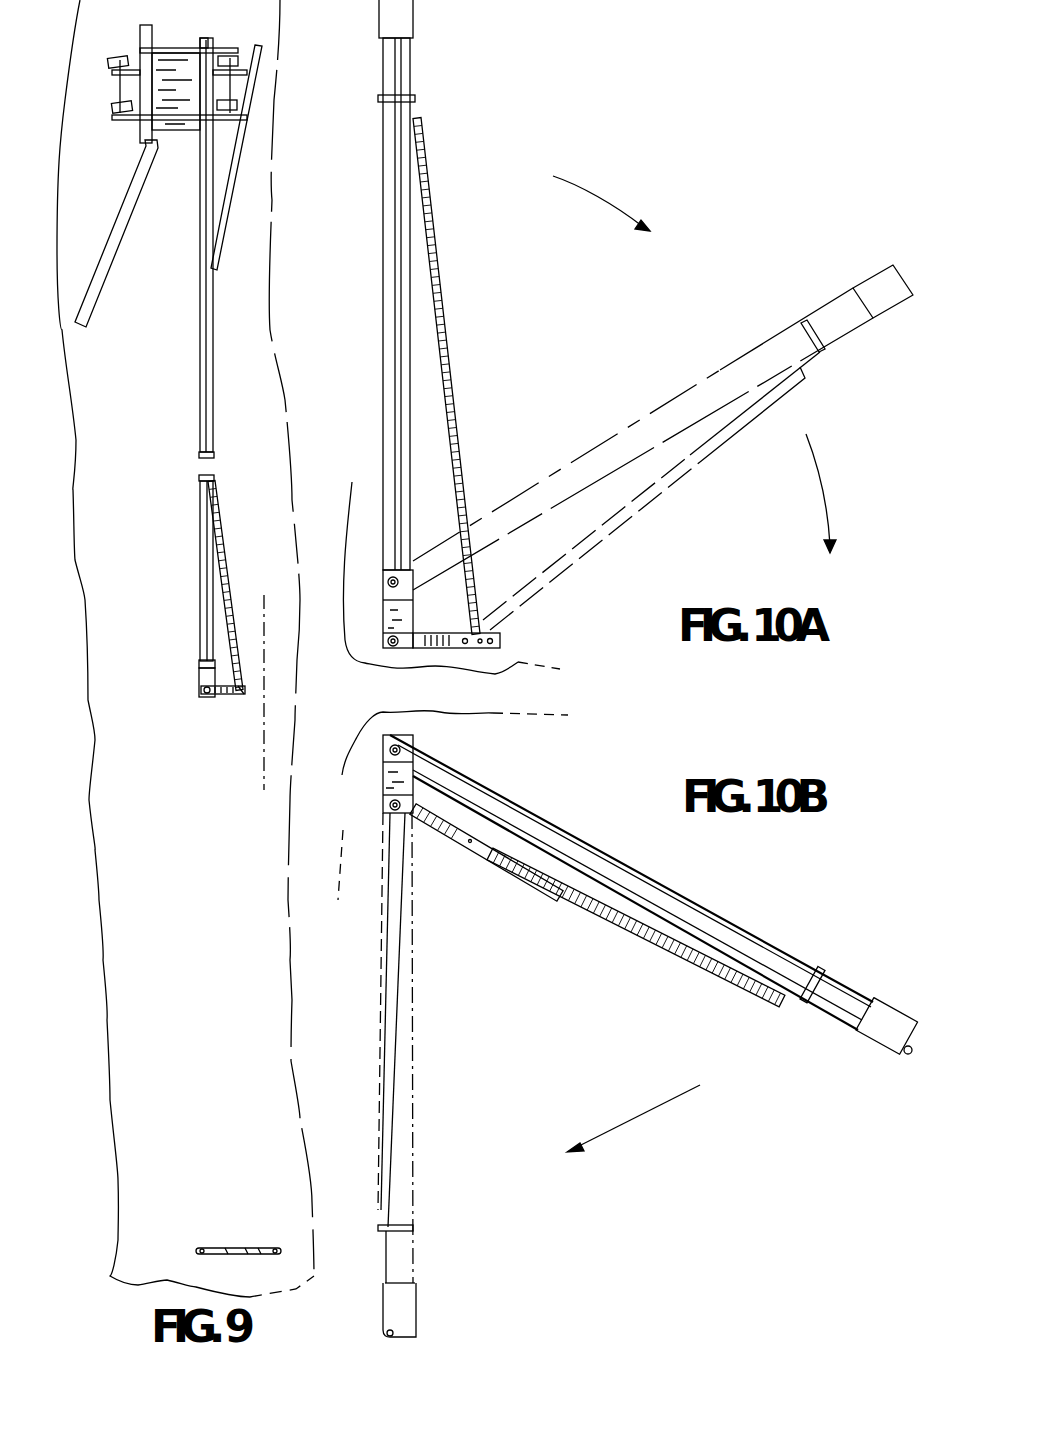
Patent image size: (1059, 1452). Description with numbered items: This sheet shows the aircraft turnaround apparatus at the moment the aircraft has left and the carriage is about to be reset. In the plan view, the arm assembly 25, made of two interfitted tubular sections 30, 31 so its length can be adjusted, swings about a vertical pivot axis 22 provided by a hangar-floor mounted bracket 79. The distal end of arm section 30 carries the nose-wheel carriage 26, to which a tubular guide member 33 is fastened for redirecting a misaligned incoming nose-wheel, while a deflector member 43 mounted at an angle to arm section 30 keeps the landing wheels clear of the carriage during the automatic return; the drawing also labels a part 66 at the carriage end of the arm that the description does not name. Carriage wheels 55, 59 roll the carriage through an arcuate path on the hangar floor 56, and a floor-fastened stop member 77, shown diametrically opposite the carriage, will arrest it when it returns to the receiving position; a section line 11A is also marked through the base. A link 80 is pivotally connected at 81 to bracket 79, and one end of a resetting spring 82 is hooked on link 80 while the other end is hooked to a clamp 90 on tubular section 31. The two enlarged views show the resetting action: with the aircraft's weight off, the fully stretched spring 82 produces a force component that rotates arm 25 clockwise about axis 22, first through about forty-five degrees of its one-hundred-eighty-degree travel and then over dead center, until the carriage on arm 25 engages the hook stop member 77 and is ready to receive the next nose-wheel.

In FIG. 9, the section line 11A is at (266, 617).
In FIG. 9, the vertical pivot axis 22 is at (199, 665).
In FIG. 10A, the vertical pivot axis 22 is at (385, 582).
In FIG. 10B, the vertical pivot axis 22 is at (408, 745).
In FIG. 9, the arm assembly 25 is at (192, 433).
In FIG. 10A, the arm assembly 25 is at (382, 342).
In FIG. 10B, the arm assembly 25 is at (886, 990).
In FIG. 9, the nose-wheel carriage 26 is at (113, 91).
In FIG. 9, the tubular arm section 30 is at (200, 340).
In FIG. 10A, the tubular arm section 30 is at (414, 20).
In FIG. 10B, the tubular arm section 30 is at (895, 1050).
In FIG. 9, the tubular arm section 31 is at (200, 600).
In FIG. 10A, the tubular arm section 31 is at (410, 82).
In FIG. 10B, the tubular arm section 31 is at (845, 975).
In FIG. 9, the tubular guide member 33 is at (120, 215).
In FIG. 9, the deflector member 43 is at (232, 200).
In FIG. 9, the carriage wheel 55 is at (240, 62).
In FIG. 9, the hangar floor 56 is at (271, 966).
In FIG. 10A, the hangar floor 56 is at (512, 668).
In FIG. 10B, the hangar floor 56 is at (505, 710).
In FIG. 9, the carriage wheel 59 is at (118, 70).
In FIG. 9, the hub housing 66 is at (183, 48).
In FIG. 9, the stop member 77 is at (232, 1242).
In FIG. 9, the bracket 79 is at (191, 684).
In FIG. 10A, the bracket 79 is at (418, 622).
In FIG. 10B, the bracket 79 is at (381, 777).
In FIG. 9, the link 80 is at (230, 695).
In FIG. 10A, the link 80 is at (437, 650).
In FIG. 10B, the link 80 is at (457, 833).
In FIG. 9, the pivotal connection 81 is at (207, 697).
In FIG. 10A, the pivotal connection 81 is at (388, 648).
In FIG. 10B, the pivotal connection 81 is at (386, 815).
In FIG. 9, the resetting spring 82 is at (228, 592).
In FIG. 10A, the resetting spring 82 is at (436, 240).
In FIG. 10B, the resetting spring 82 is at (638, 945).
In FIG. 10A, the clamp 90 is at (415, 98).
In FIG. 10B, the clamp 90 is at (822, 1005).